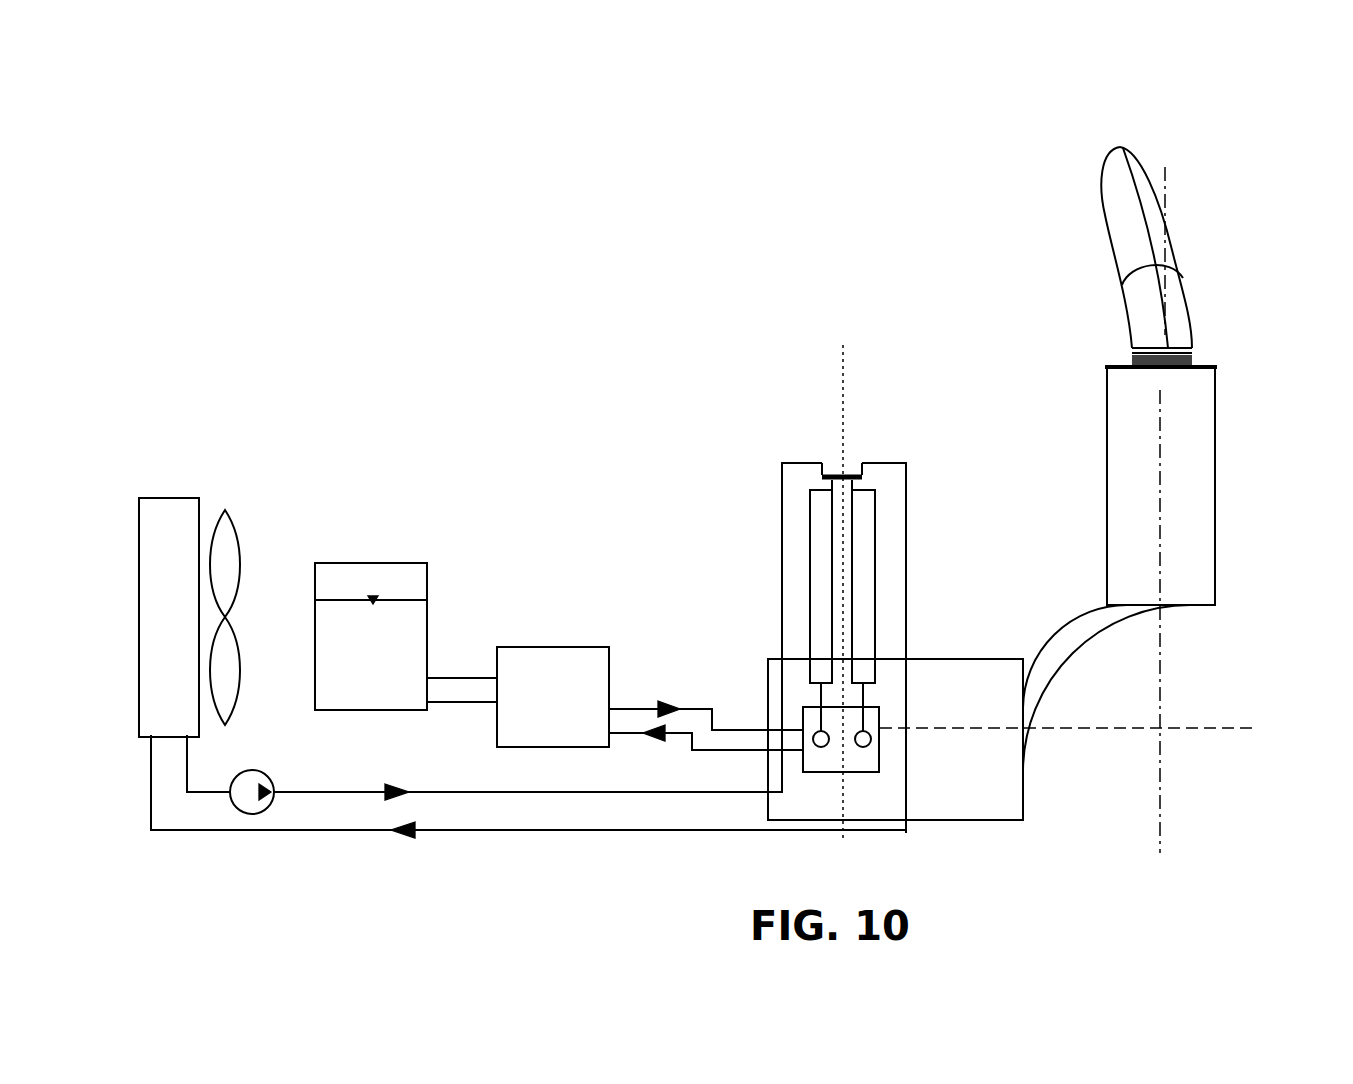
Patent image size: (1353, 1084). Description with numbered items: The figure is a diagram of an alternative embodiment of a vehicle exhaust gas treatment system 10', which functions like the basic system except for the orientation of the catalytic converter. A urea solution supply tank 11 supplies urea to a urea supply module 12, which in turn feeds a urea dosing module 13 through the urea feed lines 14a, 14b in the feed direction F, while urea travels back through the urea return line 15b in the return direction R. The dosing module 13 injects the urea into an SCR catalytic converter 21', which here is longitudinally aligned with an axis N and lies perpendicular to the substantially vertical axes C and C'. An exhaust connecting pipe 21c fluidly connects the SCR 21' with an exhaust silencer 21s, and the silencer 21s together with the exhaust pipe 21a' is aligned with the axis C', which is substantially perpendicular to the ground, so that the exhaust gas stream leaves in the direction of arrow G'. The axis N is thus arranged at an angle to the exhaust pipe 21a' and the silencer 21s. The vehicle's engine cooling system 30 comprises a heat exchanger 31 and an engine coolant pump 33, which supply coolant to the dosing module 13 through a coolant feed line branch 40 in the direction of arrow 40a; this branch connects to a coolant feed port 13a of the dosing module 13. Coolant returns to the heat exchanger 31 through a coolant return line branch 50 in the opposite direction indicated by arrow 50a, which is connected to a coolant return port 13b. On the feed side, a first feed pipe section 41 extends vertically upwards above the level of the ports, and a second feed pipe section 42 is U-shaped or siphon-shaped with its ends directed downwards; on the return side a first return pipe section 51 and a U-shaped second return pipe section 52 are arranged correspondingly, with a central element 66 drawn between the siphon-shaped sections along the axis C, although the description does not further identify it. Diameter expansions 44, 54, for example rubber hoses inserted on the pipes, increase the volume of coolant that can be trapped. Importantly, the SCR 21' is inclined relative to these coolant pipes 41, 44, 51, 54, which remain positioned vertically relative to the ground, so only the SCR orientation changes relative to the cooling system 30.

The engine cooling system 30 is at (152, 448).
The heat exchanger 31 is at (169, 617).
The engine coolant pump 33 is at (245, 800).
The urea solution supply tank 11 is at (345, 560).
The urea supply module 12 is at (545, 648).
The urea feed line 14a is at (450, 678).
The urea feed line 14b is at (630, 707).
The feed direction arrow F is at (680, 710).
The return direction arrow R is at (656, 738).
The coolant feed line branch 40 is at (583, 792).
The coolant feed flow direction arrow 40a is at (400, 788).
The coolant return line branch 50 is at (620, 832).
The coolant return flow direction arrow 50a is at (407, 834).
The urea return line 15b is at (715, 752).
The exhaust gas treatment system 10' is at (579, 427).
The first feed pipe section 41 is at (782, 507).
The second feed pipe section 42 is at (798, 463).
The diameter expansion 44 is at (814, 593).
The first return pipe section 51 is at (908, 518).
The second return pipe section 52 is at (895, 463).
The diameter expansion 54 is at (867, 608).
The central tube 66 is at (850, 477).
The axis C is at (845, 578).
The urea dosing module 13 is at (830, 710).
The coolant feed port 13a is at (826, 735).
The coolant return port 13b is at (868, 735).
The SCR catalytic converter 21' is at (905, 778).
The exhaust connecting pipe 21c is at (1170, 662).
The axis N is at (1232, 727).
The exhaust silencer 21s is at (1185, 483).
The axis C' is at (1217, 485).
The exhaust pipe 21a' is at (1205, 308).
The exhaust gas stream arrow G' is at (1118, 202).